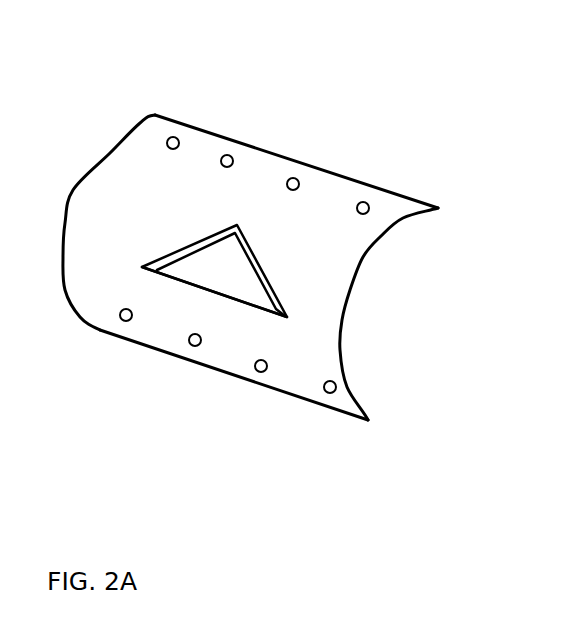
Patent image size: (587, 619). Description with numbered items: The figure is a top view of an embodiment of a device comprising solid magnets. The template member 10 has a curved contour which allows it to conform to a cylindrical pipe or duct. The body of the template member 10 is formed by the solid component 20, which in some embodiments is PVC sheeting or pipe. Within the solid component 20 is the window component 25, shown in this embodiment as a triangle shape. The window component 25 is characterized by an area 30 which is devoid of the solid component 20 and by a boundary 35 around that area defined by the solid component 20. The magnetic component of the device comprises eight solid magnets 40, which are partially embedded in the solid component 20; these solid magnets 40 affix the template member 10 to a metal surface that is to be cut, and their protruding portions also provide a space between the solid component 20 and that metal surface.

The template member 10 is at (73, 187).
The solid component 20 is at (292, 218).
The window component 25 is at (238, 299).
The area 30 is at (233, 272).
The boundary 35 is at (190, 245).
The solid magnets 40 is at (172, 136).